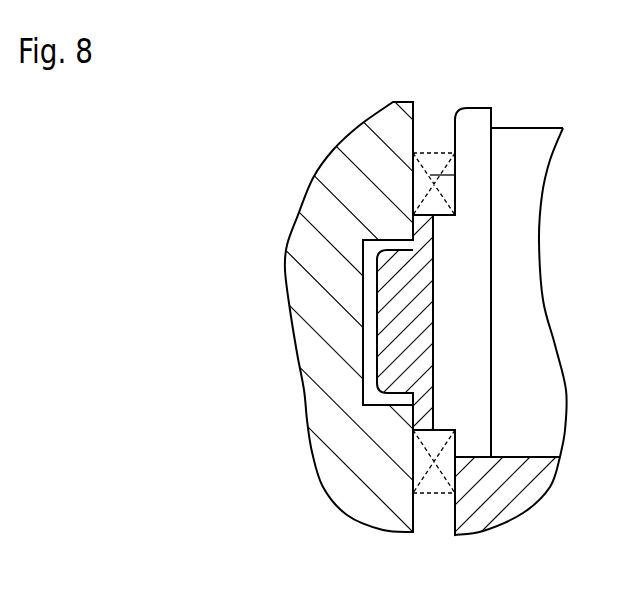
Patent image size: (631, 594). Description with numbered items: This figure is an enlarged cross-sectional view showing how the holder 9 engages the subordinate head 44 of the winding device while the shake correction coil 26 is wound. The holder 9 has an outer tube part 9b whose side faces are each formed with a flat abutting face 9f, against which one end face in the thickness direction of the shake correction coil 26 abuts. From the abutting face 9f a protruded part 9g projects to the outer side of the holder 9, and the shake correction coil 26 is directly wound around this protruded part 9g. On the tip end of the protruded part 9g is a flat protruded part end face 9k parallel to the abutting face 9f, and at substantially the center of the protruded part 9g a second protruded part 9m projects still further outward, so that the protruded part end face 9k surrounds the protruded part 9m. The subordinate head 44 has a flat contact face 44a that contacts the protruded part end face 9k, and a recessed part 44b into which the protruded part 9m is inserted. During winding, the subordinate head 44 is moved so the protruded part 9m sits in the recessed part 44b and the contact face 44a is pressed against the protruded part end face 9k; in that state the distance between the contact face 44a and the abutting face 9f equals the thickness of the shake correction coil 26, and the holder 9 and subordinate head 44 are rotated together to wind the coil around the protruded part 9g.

The subordinate head 44 is at (315, 305).
The contact face 44a is at (413, 113).
The recessed part 44b is at (363, 298).
The holder 9 is at (481, 346).
The outer tube part 9b is at (492, 122).
The abutting face 9f is at (430, 175).
The protruded part 9m is at (377, 340).
The protruded part 9g is at (388, 437).
The protruded part end face 9k is at (412, 410).
The shake correction coil 26 is at (427, 494).